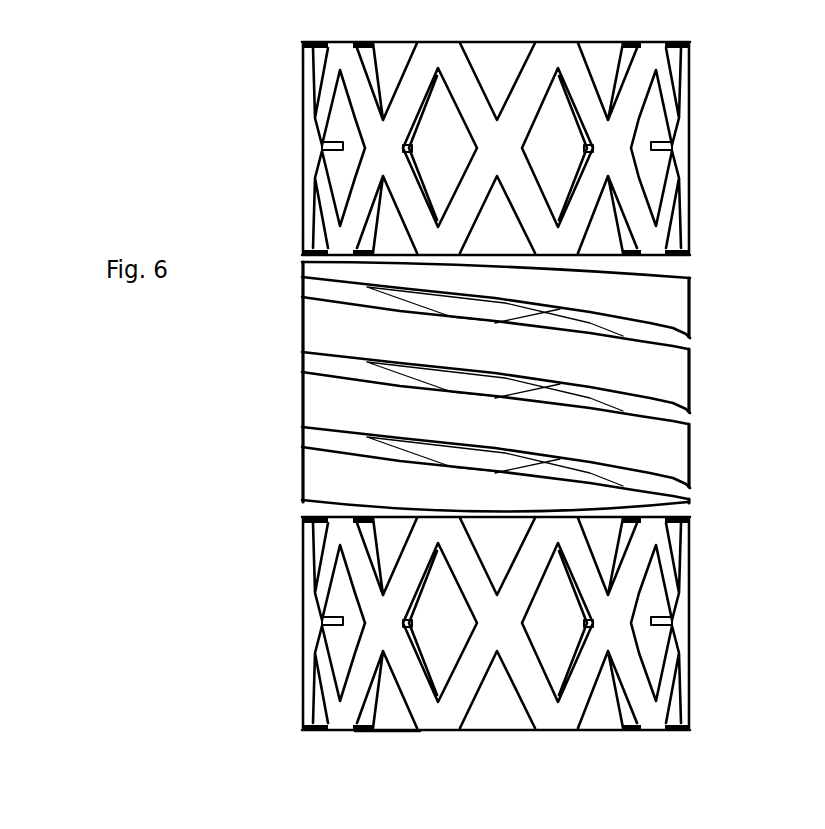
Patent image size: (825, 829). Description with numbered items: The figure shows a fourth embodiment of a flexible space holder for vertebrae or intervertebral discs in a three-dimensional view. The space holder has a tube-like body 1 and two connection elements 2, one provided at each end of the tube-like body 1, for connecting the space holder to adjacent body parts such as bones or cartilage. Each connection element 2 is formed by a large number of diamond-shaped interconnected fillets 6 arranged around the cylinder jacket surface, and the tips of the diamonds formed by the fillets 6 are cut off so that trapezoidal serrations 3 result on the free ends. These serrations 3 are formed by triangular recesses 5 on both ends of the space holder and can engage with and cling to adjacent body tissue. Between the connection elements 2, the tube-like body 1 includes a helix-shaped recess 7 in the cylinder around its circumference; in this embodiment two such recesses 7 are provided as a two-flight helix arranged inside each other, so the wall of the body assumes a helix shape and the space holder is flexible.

The tube-like body 1 is at (690, 384).
The connection elements 2 is at (692, 130).
The serrations 3 is at (438, 732).
The triangular recesses 5 is at (393, 717).
The fillets 6 is at (637, 680).
The helix-shaped recess 7 is at (690, 354).